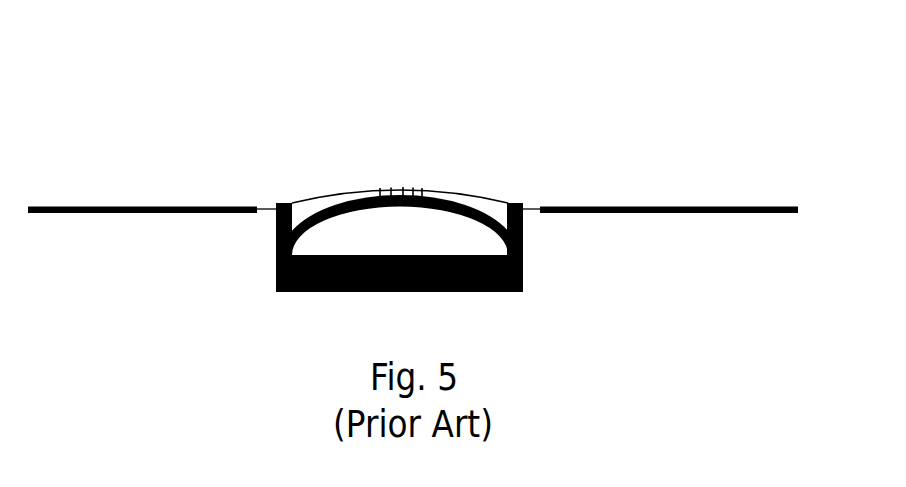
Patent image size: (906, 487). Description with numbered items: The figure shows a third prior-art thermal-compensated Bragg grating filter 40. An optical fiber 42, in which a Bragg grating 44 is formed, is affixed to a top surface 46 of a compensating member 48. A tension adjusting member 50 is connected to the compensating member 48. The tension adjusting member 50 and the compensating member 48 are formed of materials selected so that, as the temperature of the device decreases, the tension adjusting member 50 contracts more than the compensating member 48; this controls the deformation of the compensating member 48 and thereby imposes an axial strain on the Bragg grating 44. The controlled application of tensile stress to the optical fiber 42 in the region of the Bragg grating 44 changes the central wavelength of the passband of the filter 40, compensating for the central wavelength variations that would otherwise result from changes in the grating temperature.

The thermal-compensated Bragg grating filter 40 is at (615, 153).
The optical fiber 42 is at (680, 213).
The Bragg grating 44 is at (403, 176).
The top surface 46 is at (473, 205).
The compensating member 48 is at (324, 206).
The tension adjusting member 50 is at (523, 262).